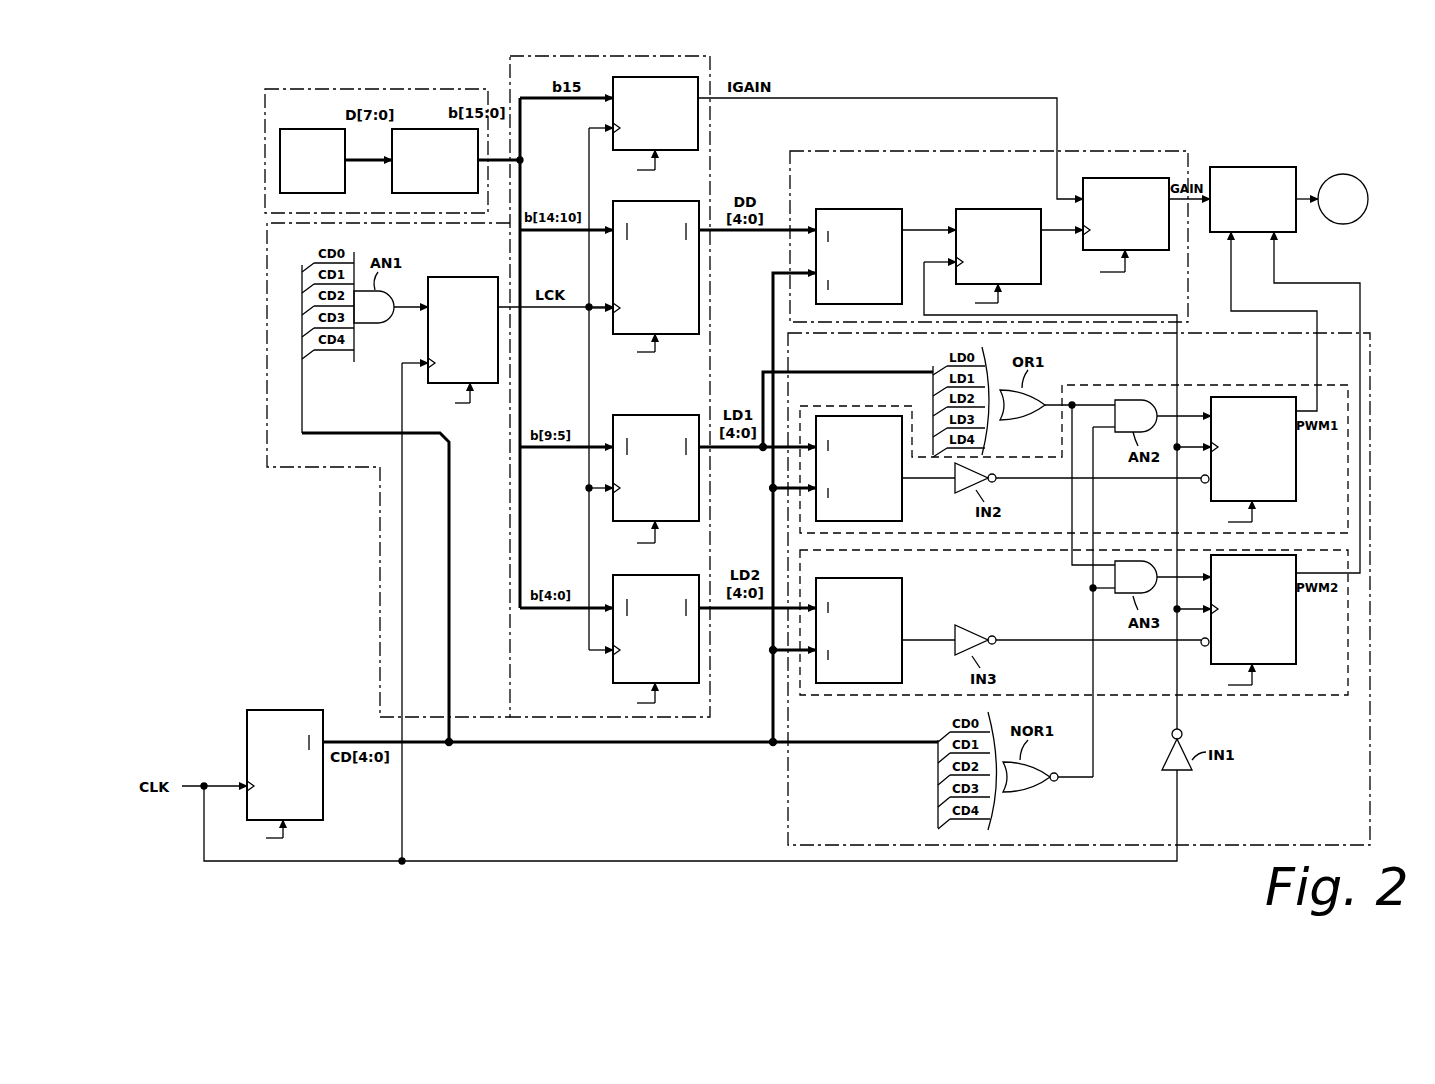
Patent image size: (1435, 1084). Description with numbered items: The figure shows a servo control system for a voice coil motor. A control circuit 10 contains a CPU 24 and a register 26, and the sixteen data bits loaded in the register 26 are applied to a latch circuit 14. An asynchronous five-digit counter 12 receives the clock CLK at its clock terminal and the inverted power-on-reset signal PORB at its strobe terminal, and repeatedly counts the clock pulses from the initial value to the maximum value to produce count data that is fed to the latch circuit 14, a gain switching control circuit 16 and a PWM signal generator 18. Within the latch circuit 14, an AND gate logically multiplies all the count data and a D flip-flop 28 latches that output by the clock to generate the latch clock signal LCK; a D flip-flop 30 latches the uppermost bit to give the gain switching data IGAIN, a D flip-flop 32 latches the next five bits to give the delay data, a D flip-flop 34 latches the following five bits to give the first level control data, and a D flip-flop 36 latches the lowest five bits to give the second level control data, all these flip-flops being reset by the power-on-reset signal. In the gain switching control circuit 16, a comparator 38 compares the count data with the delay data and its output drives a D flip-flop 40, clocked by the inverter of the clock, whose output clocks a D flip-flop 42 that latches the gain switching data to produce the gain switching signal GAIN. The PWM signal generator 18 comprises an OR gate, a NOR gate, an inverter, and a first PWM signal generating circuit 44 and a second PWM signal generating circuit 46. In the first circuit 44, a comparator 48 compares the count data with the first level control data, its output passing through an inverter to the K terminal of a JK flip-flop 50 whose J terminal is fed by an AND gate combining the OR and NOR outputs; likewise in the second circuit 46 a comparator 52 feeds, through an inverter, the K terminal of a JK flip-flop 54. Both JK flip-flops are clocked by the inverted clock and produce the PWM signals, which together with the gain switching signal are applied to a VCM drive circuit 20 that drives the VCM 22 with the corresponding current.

The control circuit 10 is at (392, 89).
The asynchronous 5-digit counter 12 is at (284, 710).
The latch circuit 14 is at (338, 467).
The gain switching control circuit 16 is at (1134, 151).
The PWM signal generator 18 is at (788, 797).
The VCM drive circuit 20 is at (1252, 167).
The VCM 22 is at (1362, 183).
The CPU 24 is at (314, 128).
The register 26 is at (433, 128).
The D flip-flop 28 is at (464, 277).
The D flip-flop 30 is at (689, 152).
The D flip-flop 32 is at (689, 334).
The D flip-flop 34 is at (655, 414).
The D flip-flop 36 is at (687, 574).
The comparator 38 is at (858, 209).
The D flip-flop 40 is at (998, 209).
The D flip-flop 42 is at (1157, 250).
The first PWM signal generating circuit 44 is at (1126, 385).
The second PWM signal generating circuit 46 is at (1296, 695).
The comparator 48 is at (902, 512).
The JK flip-flop 50 is at (1252, 397).
The comparator 52 is at (902, 590).
The JK flip-flop 54 is at (1296, 620).